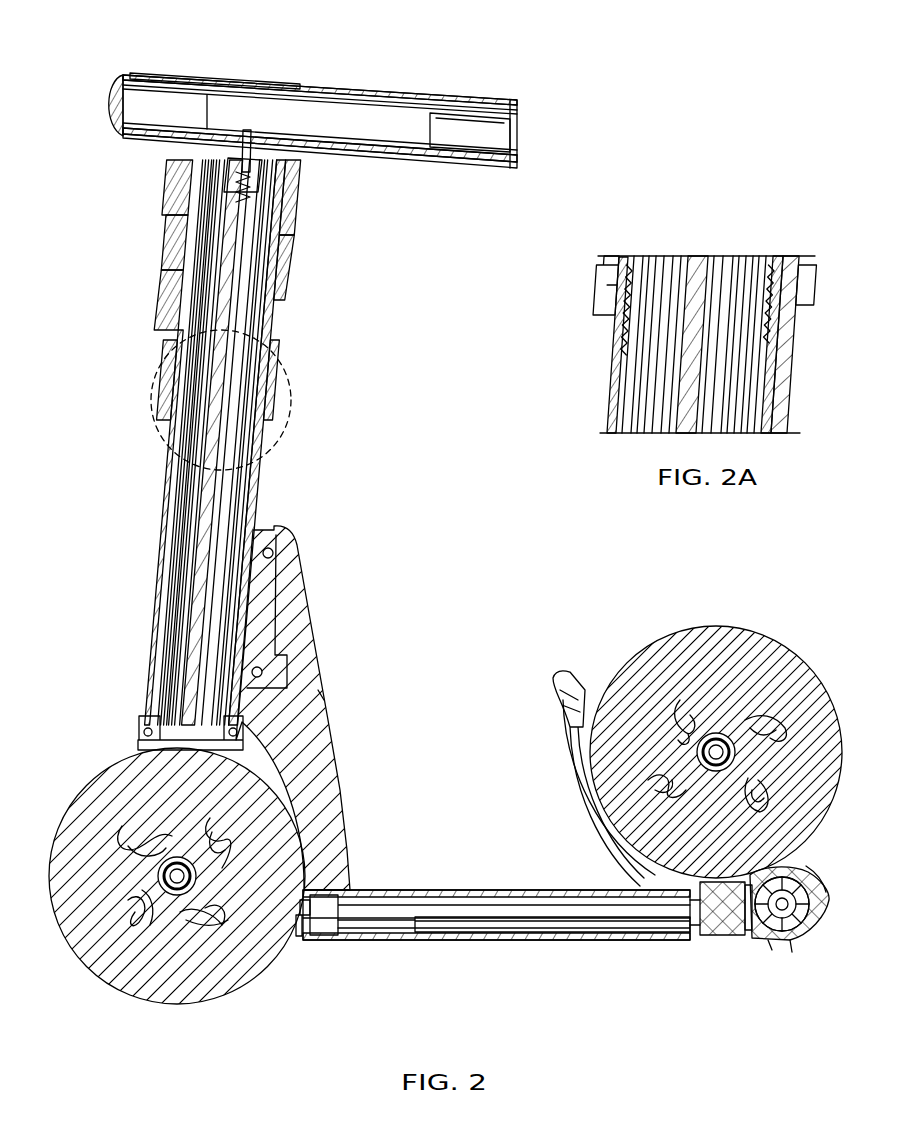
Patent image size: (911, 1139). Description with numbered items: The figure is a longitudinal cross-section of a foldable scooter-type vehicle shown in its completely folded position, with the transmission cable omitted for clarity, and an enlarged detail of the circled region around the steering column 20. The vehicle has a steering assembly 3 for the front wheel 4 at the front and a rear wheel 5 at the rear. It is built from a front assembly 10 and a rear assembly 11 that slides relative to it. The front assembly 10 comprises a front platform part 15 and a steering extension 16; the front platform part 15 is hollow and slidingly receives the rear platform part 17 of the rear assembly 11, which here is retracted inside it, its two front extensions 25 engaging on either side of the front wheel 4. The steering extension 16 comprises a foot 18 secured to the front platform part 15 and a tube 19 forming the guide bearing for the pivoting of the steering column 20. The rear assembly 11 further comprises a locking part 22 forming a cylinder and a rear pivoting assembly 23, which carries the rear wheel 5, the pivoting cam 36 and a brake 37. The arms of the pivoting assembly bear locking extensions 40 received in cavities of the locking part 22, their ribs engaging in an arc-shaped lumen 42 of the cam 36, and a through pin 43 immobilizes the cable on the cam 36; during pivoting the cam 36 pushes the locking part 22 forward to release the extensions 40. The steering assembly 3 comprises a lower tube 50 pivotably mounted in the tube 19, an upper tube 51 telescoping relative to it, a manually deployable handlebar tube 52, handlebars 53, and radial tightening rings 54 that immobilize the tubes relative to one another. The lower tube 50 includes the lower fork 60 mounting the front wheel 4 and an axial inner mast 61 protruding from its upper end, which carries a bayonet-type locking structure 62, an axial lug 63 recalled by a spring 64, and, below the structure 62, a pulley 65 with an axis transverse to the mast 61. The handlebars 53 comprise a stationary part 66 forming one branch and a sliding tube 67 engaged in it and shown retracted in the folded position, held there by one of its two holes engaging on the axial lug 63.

In FIG. 2, the steering assembly 3 is at (84, 33).
In FIG. 2, the front wheel 4 is at (103, 768).
In FIG. 2, the rear wheel 5 is at (645, 645).
In FIG. 2, the front assembly 10 is at (455, 887).
In FIG. 2, the rear assembly 11 is at (772, 950).
In FIG. 2, the front platform part 15 is at (355, 810).
In FIG. 2, the steering extension 16 is at (350, 670).
In FIG. 2, the rear platform part 17 is at (600, 890).
In FIG. 2, the foot 18 is at (298, 582).
In FIG. 2, the tube 19 is at (162, 548).
In FIG. 2A, the tube 19 is at (606, 344).
In FIG. 2, the steering column 20 is at (122, 368).
In FIG. 2, the locking part 22 is at (718, 925).
In FIG. 2, the rear pivoting assembly 23 is at (570, 638).
In FIG. 2, the front extensions 25 is at (300, 900).
In FIG. 2, the pivoting cam 36 is at (814, 882).
In FIG. 2, the brake 37 is at (570, 720).
In FIG. 2, the locking extensions 40 is at (790, 942).
In FIG. 2, the lumen 42 is at (800, 920).
In FIG. 2, the through pin 43 is at (748, 912).
In FIG. 2, the lower tube 50 is at (176, 455).
In FIG. 2A, the lower tube 50 is at (635, 344).
In FIG. 2, the upper tube 51 is at (240, 490).
In FIG. 2A, the upper tube 51 is at (775, 344).
In FIG. 2, the handlebar tube 52 is at (256, 458).
In FIG. 2A, the handlebar tube 52 is at (720, 344).
In FIG. 2, the handlebars 53 is at (450, 95).
In FIG. 2, the radial tightening rings 54 is at (173, 197).
In FIG. 2, the lower fork 60 is at (140, 740).
In FIG. 2, the axial inner mast 61 is at (257, 302).
In FIG. 2A, the axial inner mast 61 is at (661, 344).
In FIG. 2, the locking structure 62 is at (222, 174).
In FIG. 2, the axial lug 63 is at (248, 152).
In FIG. 2, the spring 64 is at (262, 190).
In FIG. 2, the pulley 65 is at (245, 242).
In FIG. 2, the stationary part 66 is at (452, 160).
In FIG. 2, the sliding tube 67 is at (188, 78).